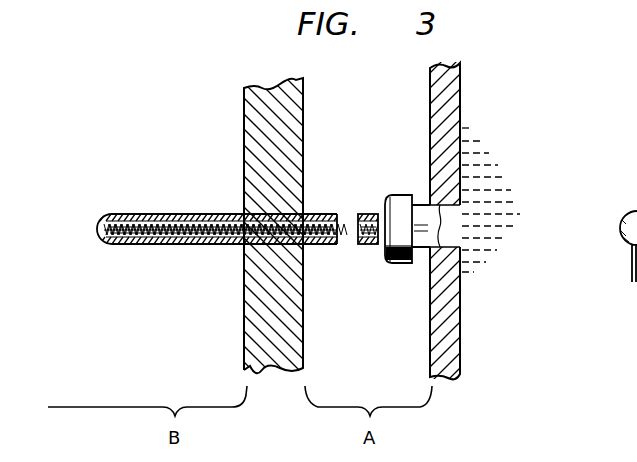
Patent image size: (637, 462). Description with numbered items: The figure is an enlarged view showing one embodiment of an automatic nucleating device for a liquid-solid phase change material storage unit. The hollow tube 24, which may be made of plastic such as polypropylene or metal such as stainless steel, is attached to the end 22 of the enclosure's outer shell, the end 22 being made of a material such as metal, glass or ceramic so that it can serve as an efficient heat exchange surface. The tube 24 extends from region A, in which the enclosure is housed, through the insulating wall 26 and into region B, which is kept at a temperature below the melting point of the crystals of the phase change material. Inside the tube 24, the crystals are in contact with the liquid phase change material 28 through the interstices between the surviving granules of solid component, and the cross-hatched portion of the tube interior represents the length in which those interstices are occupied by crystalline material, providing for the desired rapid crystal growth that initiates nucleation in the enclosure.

The end 22 is at (428, 102).
The hollow tube 24 is at (365, 213).
The insulating wall 26 is at (243, 308).
The liquid phase change material 28 is at (489, 198).